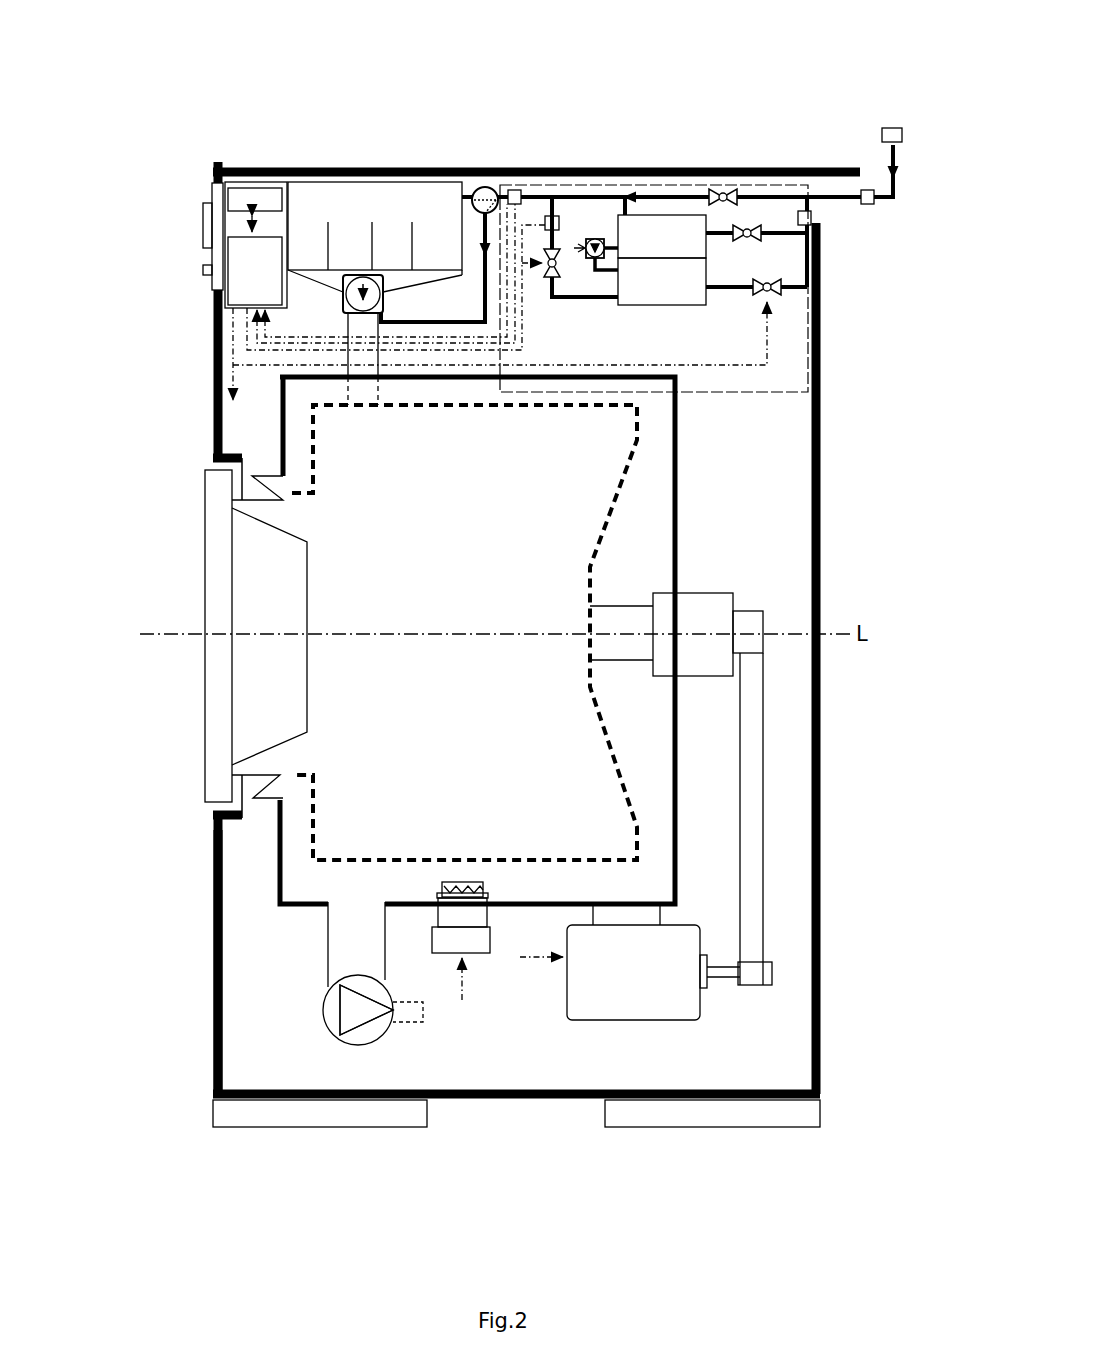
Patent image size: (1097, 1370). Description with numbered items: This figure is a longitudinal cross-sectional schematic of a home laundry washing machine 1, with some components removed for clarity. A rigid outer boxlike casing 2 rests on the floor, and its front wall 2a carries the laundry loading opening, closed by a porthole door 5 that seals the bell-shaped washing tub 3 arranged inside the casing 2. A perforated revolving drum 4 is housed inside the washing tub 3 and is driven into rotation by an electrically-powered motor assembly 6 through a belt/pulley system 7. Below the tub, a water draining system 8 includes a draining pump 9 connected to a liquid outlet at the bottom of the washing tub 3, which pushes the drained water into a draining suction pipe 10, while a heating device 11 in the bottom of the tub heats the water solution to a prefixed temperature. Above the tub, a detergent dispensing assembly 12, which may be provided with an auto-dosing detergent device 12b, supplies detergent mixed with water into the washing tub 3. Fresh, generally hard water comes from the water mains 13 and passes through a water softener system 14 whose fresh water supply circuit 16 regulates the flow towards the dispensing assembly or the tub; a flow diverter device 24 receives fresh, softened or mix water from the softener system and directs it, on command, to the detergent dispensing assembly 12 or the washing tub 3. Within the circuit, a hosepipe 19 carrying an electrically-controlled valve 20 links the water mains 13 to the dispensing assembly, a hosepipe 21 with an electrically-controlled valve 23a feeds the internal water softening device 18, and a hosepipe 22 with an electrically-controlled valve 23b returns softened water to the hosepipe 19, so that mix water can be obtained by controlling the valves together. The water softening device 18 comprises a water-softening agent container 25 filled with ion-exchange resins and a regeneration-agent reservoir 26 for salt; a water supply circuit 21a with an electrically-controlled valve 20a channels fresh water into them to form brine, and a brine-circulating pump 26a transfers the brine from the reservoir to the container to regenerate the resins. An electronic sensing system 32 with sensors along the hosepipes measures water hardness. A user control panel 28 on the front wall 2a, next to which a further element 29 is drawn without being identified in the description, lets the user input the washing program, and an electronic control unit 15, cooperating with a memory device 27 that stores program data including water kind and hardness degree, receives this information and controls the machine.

The home laundry washing machine 1 is at (262, 1144).
The outer boxlike casing 2 is at (212, 1013).
The front wall 2a is at (208, 926).
The washing tub 3 is at (282, 857).
The revolving perforated drum 4 is at (312, 822).
The porthole door 5 is at (204, 736).
The motor assembly 6 is at (603, 1005).
The belt/pulley system 7 is at (764, 872).
The water draining system 8 is at (383, 1043).
The draining pump 9 is at (362, 1062).
The draining suction pipe 10 is at (421, 1014).
The heating device 11 is at (482, 962).
The detergent dispensing assembly 12 is at (336, 190).
The auto-dosing detergent device 12b is at (372, 272).
The water mains 13 is at (893, 126).
The water softener system 14 is at (767, 392).
The electronic control unit 15 is at (252, 278).
The fresh water supply circuit 16 is at (845, 220).
The internal water softening device 18 is at (625, 210).
The hosepipe 19 is at (780, 193).
The electrically-controlled valve 20 is at (722, 190).
The electrically-controlled valve 20a is at (747, 228).
The hosepipe 21 is at (806, 272).
The water supply circuit 21a is at (740, 290).
The hosepipe 22 is at (589, 299).
The electrically-controlled valve 23a is at (781, 291).
The electrically-controlled valve 23b is at (557, 250).
The flow diverter device 24 is at (505, 228).
The water-softening agent container 25 is at (662, 281).
The regeneration-agent reservoir 26 is at (662, 236).
The brine-circulating pump 26a is at (595, 238).
The memory device 27 is at (257, 202).
The user control panel 28 is at (208, 190).
The user interface 29 is at (198, 230).
The electronic sensing system 32 is at (550, 216).